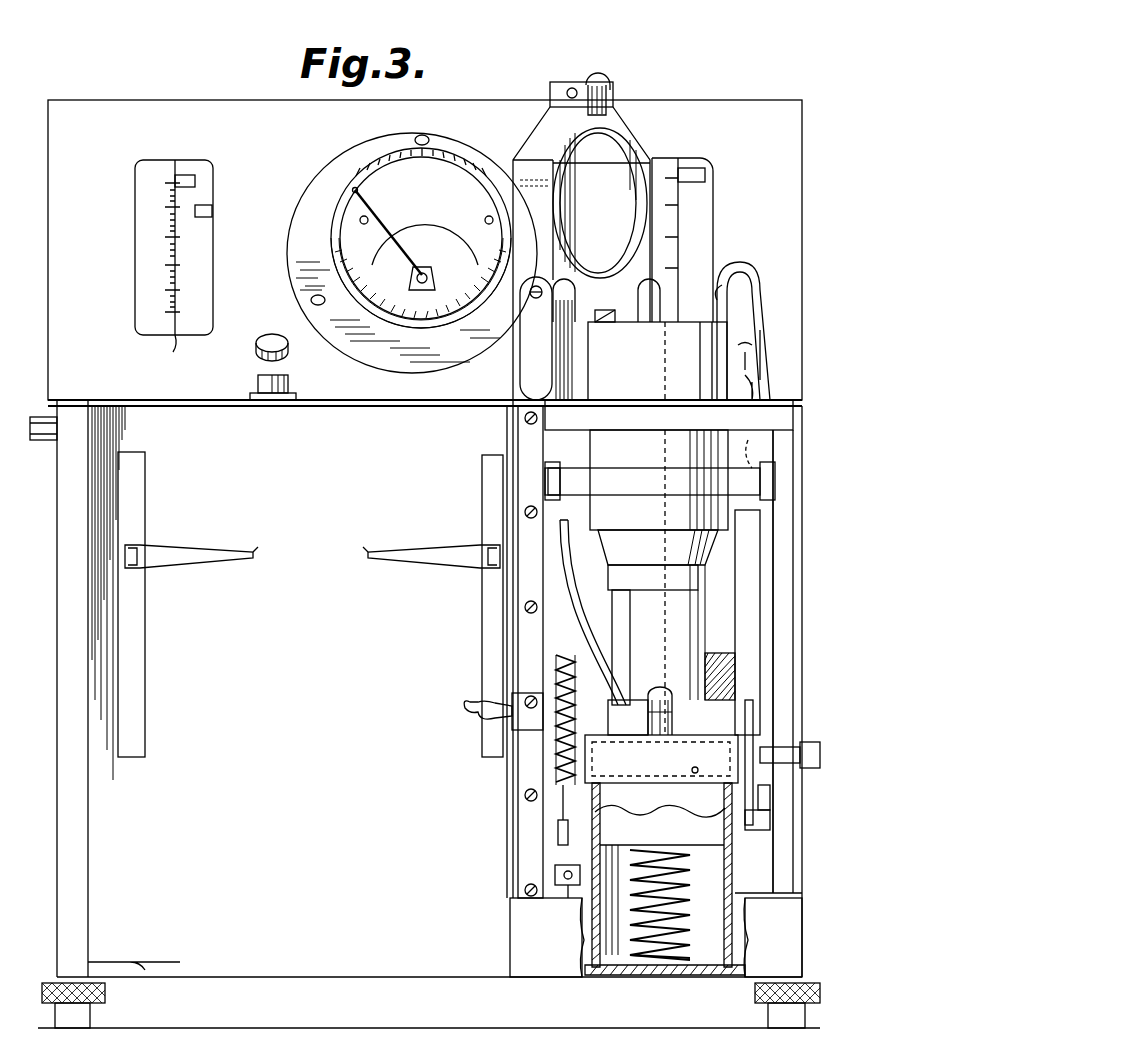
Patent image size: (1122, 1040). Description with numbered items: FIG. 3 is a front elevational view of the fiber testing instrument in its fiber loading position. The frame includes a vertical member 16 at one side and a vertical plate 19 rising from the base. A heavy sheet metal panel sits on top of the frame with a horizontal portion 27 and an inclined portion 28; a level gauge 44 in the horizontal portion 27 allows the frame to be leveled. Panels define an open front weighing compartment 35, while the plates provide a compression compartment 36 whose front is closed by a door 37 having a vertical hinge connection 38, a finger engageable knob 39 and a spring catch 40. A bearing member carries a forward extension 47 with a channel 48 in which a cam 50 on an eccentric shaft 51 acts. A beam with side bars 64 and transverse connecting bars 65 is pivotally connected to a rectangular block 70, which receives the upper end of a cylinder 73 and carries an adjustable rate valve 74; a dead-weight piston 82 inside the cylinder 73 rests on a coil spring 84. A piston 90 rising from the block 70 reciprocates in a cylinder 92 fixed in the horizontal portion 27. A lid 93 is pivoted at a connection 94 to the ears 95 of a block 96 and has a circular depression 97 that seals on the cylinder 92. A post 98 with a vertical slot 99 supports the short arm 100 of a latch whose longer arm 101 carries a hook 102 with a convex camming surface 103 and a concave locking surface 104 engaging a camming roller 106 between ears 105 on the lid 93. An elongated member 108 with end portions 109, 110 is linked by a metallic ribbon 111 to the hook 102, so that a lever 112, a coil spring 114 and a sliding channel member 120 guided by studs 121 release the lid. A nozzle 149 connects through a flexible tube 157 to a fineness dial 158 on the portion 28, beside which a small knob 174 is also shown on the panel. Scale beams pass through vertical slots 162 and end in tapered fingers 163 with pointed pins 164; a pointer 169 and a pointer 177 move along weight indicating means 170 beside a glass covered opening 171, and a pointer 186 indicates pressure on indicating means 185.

The vertical member 16 is at (82, 878).
The vertical plate 19 is at (785, 578).
The horizontal portion 27 is at (340, 406).
The panel portion 28 is at (722, 108).
The weighing compartment 35 is at (320, 755).
The compression compartment 36 is at (563, 847).
The door 37 is at (518, 796).
The vertical hinge connection 38 is at (520, 770).
The finger engageable knob 39 is at (478, 712).
The spring catch 40 is at (522, 700).
The level gauge 44 is at (258, 385).
The forward extension 47 is at (748, 830).
The channel 48 is at (770, 805).
The cam 50 is at (755, 712).
The eccentric shaft 51 is at (812, 742).
The side bars 64 is at (768, 650).
The transverse connecting bars 65 is at (718, 650).
The rectangular block 70 is at (661, 776).
The cylinder 73 is at (610, 965).
The adjustable rate valve 74 is at (660, 690).
The dead-weight piston 82 is at (700, 848).
The coil spring 84 is at (685, 935).
The piston 90 is at (659, 582).
The cylinder 92 is at (657, 361).
The lid 93 is at (540, 112).
The pivotal connection 94 is at (536, 298).
The ears 95 is at (566, 318).
The block 96 is at (528, 384).
The circular depression 97 is at (600, 203).
The post 98 is at (752, 345).
The vertical slot 99 is at (748, 350).
The short arm 100 is at (750, 398).
The longer arm 101 is at (758, 325).
The hook 102 is at (748, 268).
The convex upper camming surface 103 is at (722, 262).
The lower concave locking surface 104 is at (662, 312).
The ears 105 is at (606, 92).
The camming roller 106 is at (598, 78).
The elongated member 108 is at (660, 481).
The end portion 109 is at (741, 454).
The end portion 110 is at (572, 457).
The metallic ribbon 111 is at (758, 390).
The lever 112 is at (558, 835).
The coil spring 114 is at (578, 765).
The channel member 120 is at (568, 900).
The studs 121 is at (555, 878).
The nozzle 149 is at (632, 598).
The flexible tube 157 is at (578, 622).
The fiber fineness indicating dial 158 is at (315, 202).
The vertical slots 162 is at (148, 700).
The fingers 163 is at (196, 542).
The pointed pin 164 is at (256, 560).
The pointer 169 is at (185, 176).
The weight indicating means 170 is at (150, 198).
The glass covered opening 171 is at (173, 352).
The knob 174 is at (269, 335).
The pointer 177 is at (212, 208).
The indicating means 185 is at (670, 158).
The pointer 186 is at (706, 172).